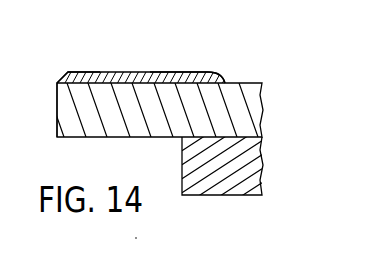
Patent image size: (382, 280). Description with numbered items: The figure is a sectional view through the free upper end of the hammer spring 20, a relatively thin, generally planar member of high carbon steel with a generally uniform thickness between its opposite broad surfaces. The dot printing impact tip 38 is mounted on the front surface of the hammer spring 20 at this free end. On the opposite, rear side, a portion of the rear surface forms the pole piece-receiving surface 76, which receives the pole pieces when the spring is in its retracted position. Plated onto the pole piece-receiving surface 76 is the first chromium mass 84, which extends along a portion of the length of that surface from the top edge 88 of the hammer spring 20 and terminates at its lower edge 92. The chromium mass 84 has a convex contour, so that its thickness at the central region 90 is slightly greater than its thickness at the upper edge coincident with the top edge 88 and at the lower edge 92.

The hammer spring 20 is at (111, 140).
The dot printing impact tip 38 is at (203, 196).
The top edge 88 is at (57, 111).
The central region 90 is at (150, 73).
The pole piece-receiving surface 76 is at (91, 83).
The first chromium mass 84 is at (178, 73).
The lower edge 92 is at (217, 79).